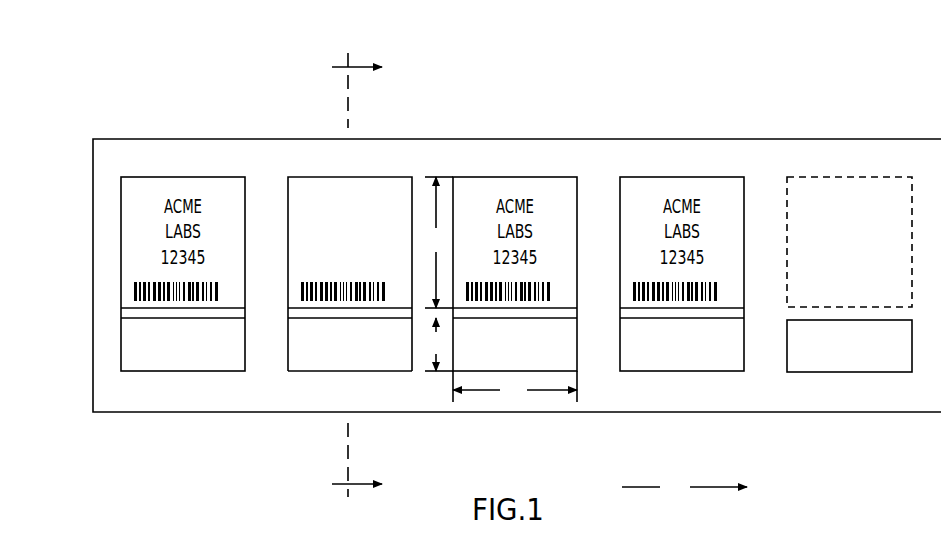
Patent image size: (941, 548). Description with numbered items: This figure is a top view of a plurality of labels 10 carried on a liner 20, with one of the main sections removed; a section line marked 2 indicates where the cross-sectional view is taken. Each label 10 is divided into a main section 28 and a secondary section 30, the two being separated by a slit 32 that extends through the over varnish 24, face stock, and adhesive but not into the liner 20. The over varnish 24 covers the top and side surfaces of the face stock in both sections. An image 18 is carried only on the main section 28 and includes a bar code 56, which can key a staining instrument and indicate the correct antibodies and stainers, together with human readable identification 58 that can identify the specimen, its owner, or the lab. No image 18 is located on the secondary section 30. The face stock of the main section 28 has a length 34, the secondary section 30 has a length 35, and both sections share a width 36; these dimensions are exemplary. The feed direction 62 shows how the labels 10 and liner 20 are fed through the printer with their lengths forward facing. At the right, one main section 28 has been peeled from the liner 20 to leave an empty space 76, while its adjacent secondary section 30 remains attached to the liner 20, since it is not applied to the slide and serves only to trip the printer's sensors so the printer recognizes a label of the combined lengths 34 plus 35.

The label 10 is at (150, 131).
The section line 2- 2 is at (355, 276).
The image 18 is at (368, 205).
The liner 20 is at (143, 405).
The over varnish 24 is at (298, 358).
The main section 28 is at (303, 187).
The secondary section 30 is at (323, 365).
The slit 32 is at (292, 313).
The length 34 is at (437, 242).
The length 35 is at (437, 344).
The width 36 is at (515, 386).
The bar code 56 is at (302, 287).
The identification 58 is at (330, 205).
The feed direction 62 is at (684, 487).
The empty space 76 is at (848, 208).